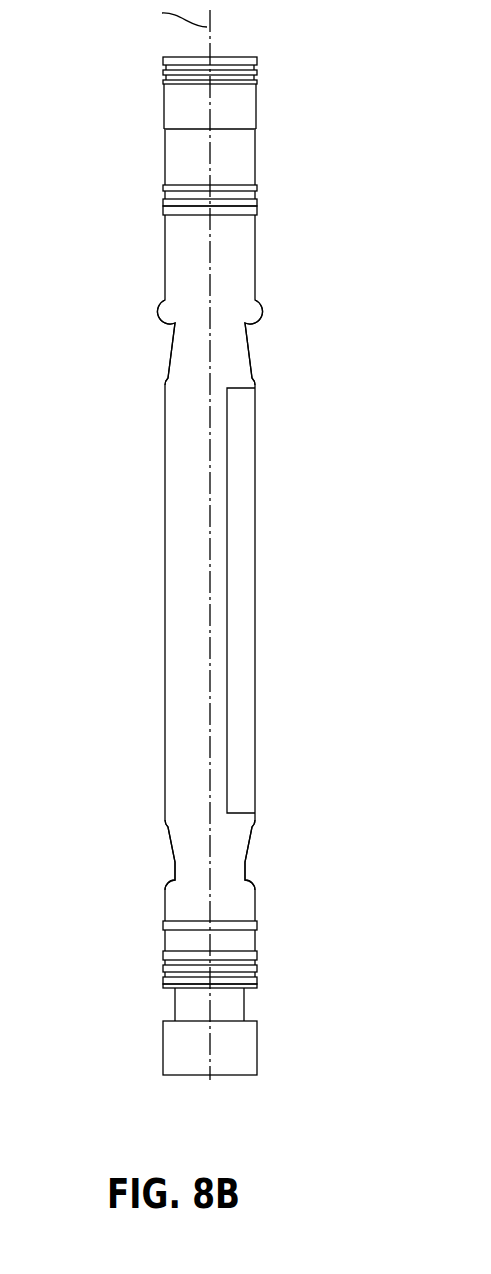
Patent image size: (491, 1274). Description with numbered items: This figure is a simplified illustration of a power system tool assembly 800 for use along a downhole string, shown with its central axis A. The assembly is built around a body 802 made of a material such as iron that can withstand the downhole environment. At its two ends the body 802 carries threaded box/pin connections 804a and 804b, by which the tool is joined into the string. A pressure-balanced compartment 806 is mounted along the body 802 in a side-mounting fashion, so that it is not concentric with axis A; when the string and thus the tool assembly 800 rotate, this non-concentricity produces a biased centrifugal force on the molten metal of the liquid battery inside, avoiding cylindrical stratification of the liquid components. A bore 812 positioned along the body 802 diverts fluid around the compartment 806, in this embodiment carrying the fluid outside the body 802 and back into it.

The power system tool assembly 800 is at (110, 476).
The body 802 is at (165, 143).
The threaded box/pin connection 804a is at (240, 1075).
The threaded box/pin connection 804b is at (257, 95).
The pressure-balanced compartment 806 is at (240, 527).
The bore 812 is at (173, 335).